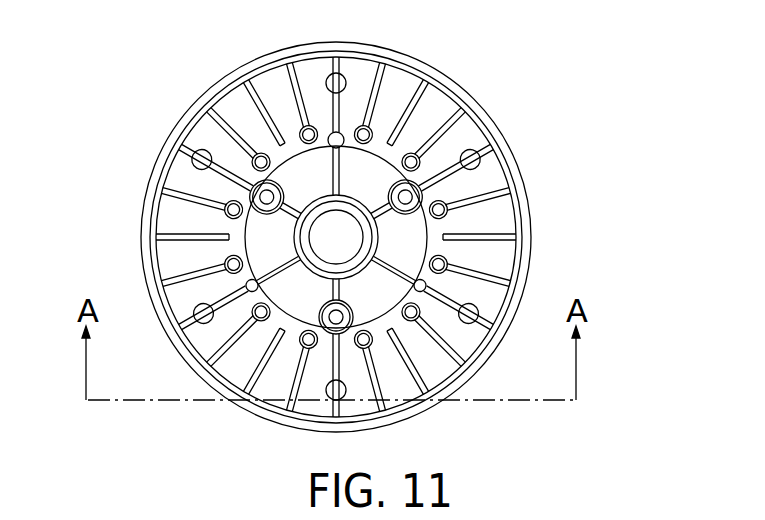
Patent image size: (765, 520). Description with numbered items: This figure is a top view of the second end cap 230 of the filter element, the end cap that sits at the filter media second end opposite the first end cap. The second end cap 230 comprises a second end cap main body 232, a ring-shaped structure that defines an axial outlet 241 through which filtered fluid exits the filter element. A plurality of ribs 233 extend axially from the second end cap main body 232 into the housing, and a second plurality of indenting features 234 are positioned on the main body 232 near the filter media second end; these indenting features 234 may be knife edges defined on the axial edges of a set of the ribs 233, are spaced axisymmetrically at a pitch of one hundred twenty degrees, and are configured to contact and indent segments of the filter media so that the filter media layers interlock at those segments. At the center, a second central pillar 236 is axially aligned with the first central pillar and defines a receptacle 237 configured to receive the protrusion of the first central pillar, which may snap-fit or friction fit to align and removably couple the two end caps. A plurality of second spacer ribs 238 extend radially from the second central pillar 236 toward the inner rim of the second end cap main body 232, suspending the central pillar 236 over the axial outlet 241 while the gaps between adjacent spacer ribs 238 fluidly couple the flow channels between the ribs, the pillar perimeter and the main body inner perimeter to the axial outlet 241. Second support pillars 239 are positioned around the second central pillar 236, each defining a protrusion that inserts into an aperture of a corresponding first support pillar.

The second end cap 230 is at (543, 108).
The second end cap main body 232 is at (505, 220).
The ribs 233 is at (156, 268).
The second plurality of indenting features 234 is at (190, 158).
The second central pillar 236 is at (230, 233).
The receptacle 237 is at (327, 226).
The second spacer ribs 238 is at (249, 193).
The second support pillars 239 is at (310, 204).
The axial outlet 241 is at (373, 170).